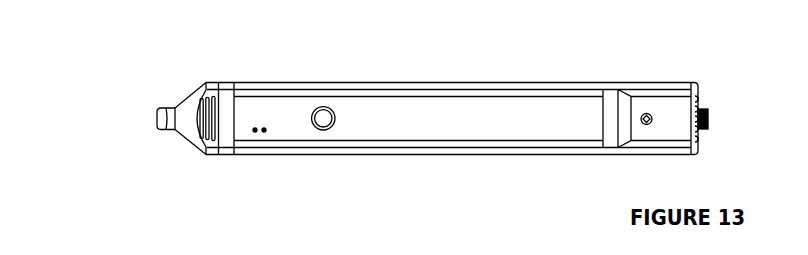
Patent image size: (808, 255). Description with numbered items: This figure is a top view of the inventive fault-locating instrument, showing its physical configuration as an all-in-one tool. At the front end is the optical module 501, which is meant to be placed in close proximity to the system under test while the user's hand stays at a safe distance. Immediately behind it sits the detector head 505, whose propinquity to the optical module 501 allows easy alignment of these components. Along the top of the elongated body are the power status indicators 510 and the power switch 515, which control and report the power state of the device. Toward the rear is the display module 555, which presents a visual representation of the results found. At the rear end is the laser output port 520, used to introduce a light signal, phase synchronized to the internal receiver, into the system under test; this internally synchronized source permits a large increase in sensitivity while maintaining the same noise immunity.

The optical module 501 is at (172, 112).
The detector head 505 is at (228, 95).
The power status indicators 510 is at (261, 136).
The power switch 515 is at (324, 130).
The display module 555 is at (667, 105).
The laser output port 520 is at (712, 118).